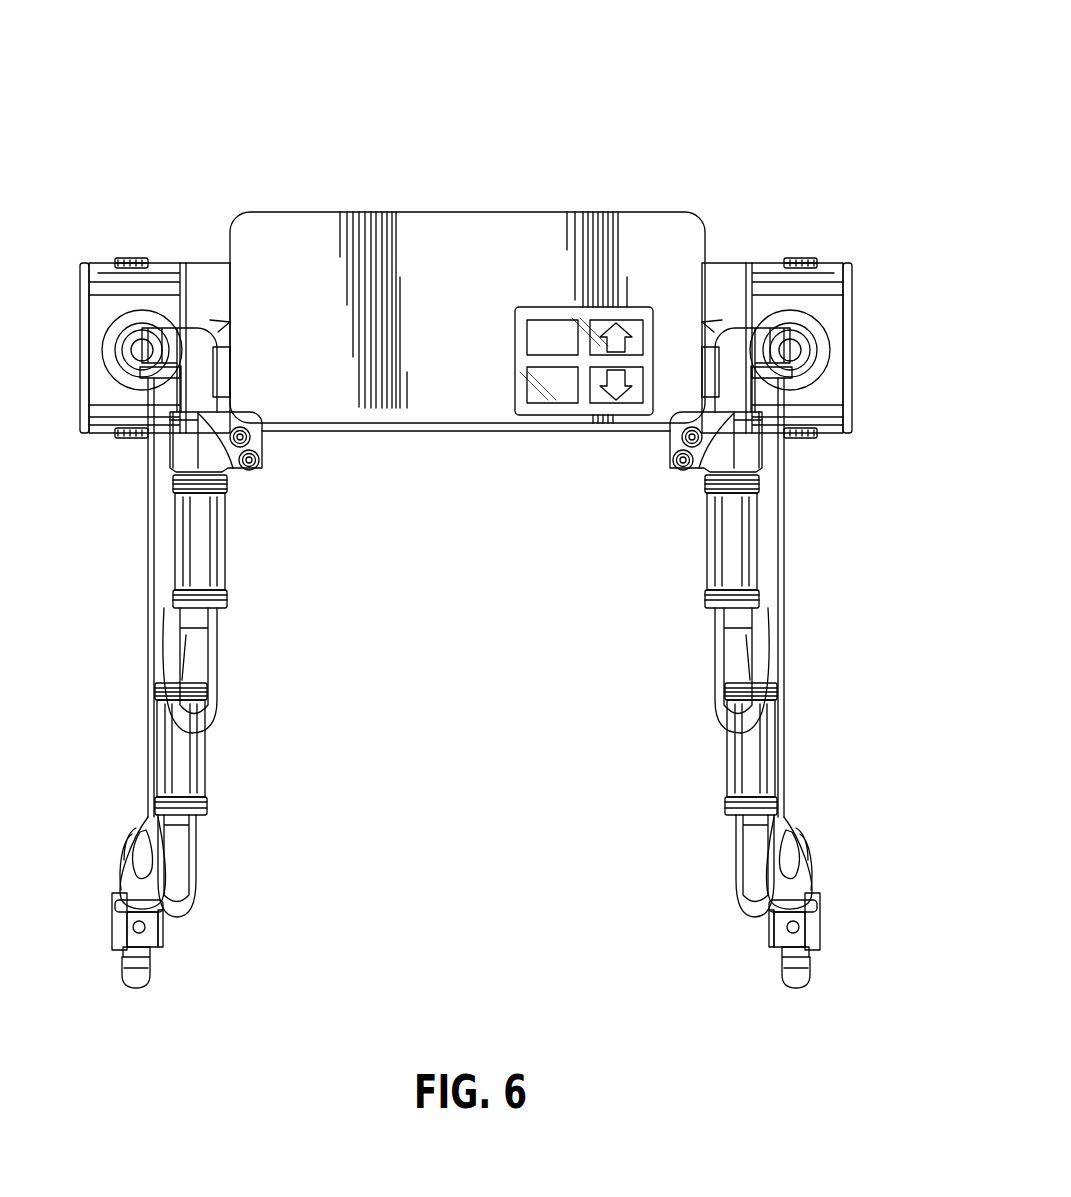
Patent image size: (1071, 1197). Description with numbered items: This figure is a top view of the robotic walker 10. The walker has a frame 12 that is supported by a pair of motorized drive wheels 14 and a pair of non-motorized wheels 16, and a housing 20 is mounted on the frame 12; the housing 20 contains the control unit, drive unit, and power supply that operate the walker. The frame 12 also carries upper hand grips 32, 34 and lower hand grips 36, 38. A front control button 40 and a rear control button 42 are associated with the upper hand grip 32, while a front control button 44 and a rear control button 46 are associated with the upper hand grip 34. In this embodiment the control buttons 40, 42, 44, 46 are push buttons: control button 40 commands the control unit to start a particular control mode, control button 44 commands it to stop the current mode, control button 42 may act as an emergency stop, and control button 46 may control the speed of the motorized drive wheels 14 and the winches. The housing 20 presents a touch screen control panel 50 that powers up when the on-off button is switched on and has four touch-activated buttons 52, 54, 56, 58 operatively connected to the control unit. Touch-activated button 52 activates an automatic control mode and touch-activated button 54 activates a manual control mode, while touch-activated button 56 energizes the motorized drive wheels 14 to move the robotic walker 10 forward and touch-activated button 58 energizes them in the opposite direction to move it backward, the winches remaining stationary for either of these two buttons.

The robotic walker 10 is at (675, 121).
The frame 12 is at (150, 546).
The motorized drive wheels 14 is at (132, 256).
The non-motorized wheels 16 is at (129, 988).
The housing 20 is at (470, 262).
The upper hand grip 32 is at (705, 548).
The upper hand grip 34 is at (227, 545).
The lower hand grip 36 is at (724, 748).
The lower hand grip 38 is at (207, 770).
The front control button 40 is at (682, 437).
The rear control button 42 is at (678, 468).
The front control button 44 is at (250, 437).
The rear control button 46 is at (254, 468).
The touch screen control panel 50 is at (545, 418).
The touch-activated button 52 is at (527, 337).
The touch-activated button 54 is at (527, 388).
The touch-activated button 56 is at (643, 328).
The touch-activated button 58 is at (643, 378).